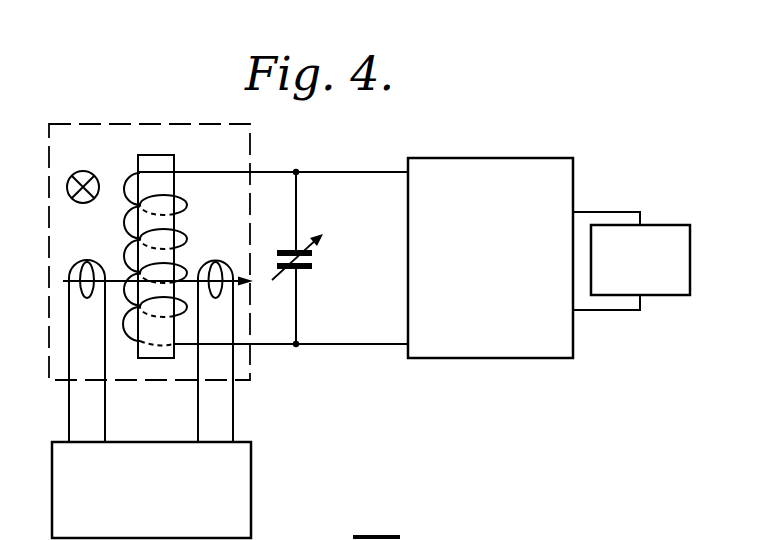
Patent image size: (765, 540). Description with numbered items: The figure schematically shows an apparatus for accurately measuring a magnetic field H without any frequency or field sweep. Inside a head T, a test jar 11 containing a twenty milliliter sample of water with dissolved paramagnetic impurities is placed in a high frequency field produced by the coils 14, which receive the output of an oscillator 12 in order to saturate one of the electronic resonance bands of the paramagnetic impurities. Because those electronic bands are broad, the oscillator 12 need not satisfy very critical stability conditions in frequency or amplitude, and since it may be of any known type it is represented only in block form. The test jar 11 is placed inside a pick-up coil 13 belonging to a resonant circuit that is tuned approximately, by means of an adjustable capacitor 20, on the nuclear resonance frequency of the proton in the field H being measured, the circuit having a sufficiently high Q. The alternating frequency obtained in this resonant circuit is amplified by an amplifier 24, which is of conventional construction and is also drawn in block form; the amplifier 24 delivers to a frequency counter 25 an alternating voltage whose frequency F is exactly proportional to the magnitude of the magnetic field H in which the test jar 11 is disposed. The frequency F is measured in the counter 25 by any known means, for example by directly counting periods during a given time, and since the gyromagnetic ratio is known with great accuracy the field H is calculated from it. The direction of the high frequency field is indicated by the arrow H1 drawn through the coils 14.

The test jar 11 is at (165, 167).
The oscillator 12 is at (253, 465).
The pick-up coil 13 is at (128, 233).
The coils 14 is at (77, 263).
The adjustable capacitor 20 is at (313, 265).
The amplifier 24 is at (494, 173).
The frequency counter 25 is at (631, 261).
The head T is at (163, 128).
The magnetic field H is at (85, 175).
The magnetic field H1 is at (284, 284).